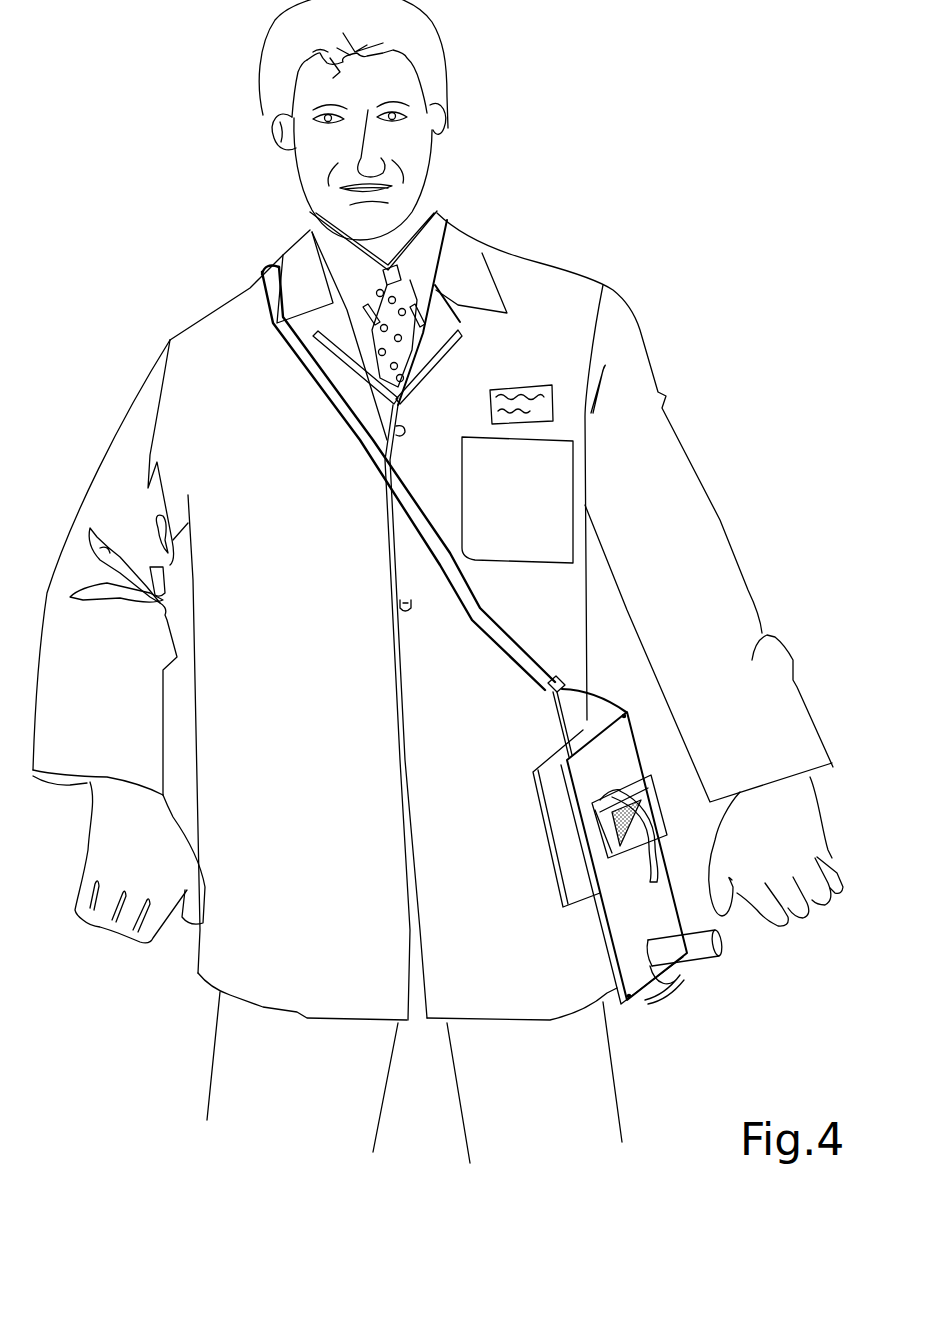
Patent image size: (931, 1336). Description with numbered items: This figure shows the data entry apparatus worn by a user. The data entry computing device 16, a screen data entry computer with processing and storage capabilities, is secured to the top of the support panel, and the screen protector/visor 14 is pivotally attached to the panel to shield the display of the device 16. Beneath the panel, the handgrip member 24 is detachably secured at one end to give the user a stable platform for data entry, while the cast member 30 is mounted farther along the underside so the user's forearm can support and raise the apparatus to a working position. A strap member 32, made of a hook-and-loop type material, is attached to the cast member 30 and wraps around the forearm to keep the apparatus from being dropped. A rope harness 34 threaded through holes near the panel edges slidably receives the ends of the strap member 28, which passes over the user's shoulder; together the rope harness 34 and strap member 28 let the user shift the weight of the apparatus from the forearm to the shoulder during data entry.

The screen protector/visor 14 is at (561, 893).
The data entry computing device 16 is at (552, 813).
The handgrip member 24 is at (697, 950).
The strap member 28 is at (273, 262).
The cast member 30 is at (618, 793).
The strap member 32 is at (652, 858).
The rope harness 34 is at (553, 725).